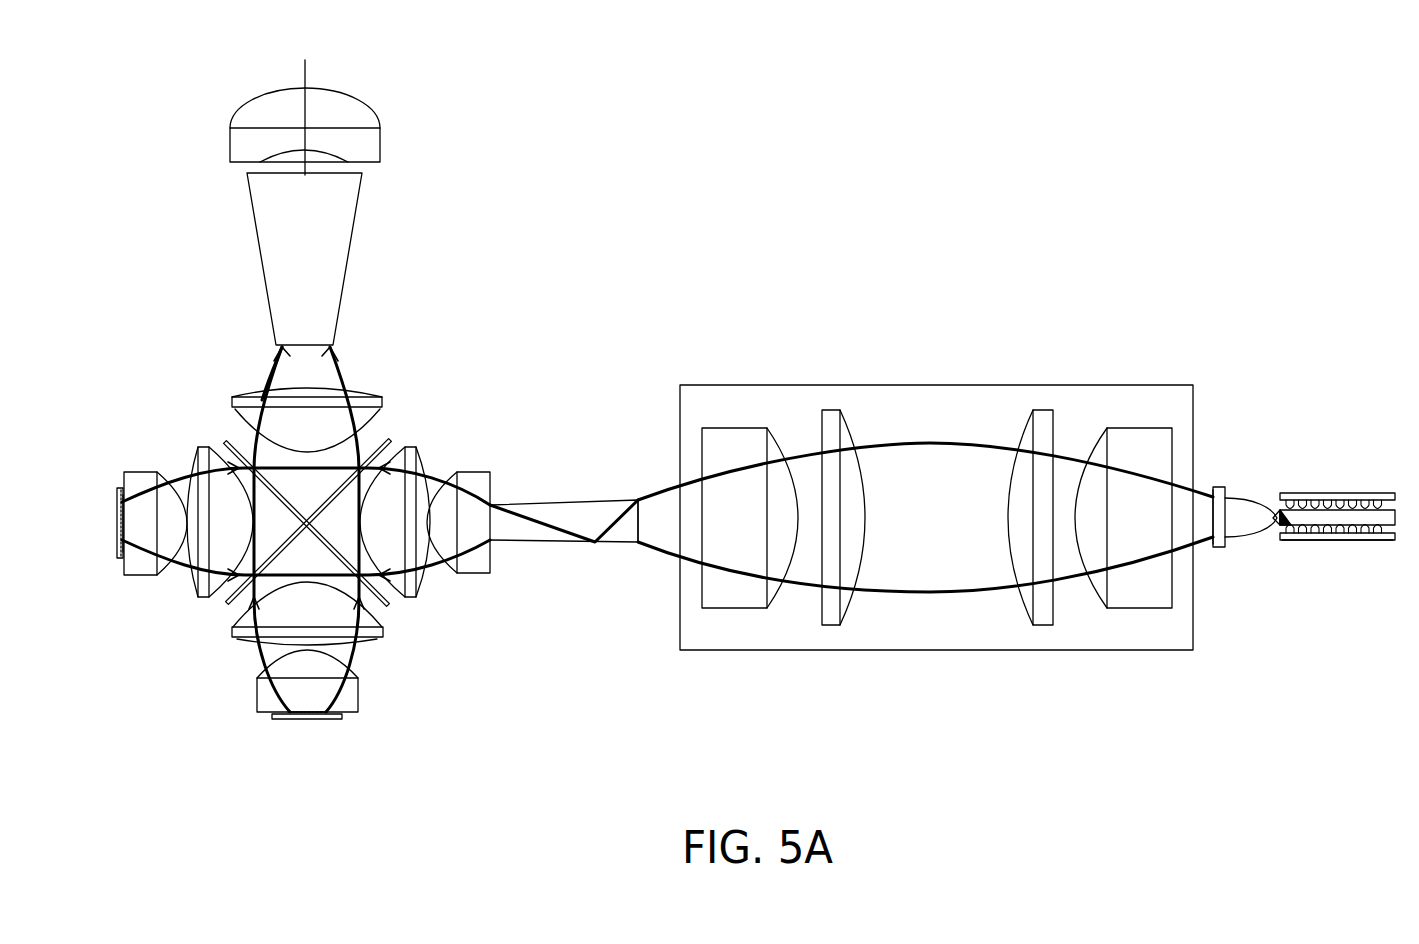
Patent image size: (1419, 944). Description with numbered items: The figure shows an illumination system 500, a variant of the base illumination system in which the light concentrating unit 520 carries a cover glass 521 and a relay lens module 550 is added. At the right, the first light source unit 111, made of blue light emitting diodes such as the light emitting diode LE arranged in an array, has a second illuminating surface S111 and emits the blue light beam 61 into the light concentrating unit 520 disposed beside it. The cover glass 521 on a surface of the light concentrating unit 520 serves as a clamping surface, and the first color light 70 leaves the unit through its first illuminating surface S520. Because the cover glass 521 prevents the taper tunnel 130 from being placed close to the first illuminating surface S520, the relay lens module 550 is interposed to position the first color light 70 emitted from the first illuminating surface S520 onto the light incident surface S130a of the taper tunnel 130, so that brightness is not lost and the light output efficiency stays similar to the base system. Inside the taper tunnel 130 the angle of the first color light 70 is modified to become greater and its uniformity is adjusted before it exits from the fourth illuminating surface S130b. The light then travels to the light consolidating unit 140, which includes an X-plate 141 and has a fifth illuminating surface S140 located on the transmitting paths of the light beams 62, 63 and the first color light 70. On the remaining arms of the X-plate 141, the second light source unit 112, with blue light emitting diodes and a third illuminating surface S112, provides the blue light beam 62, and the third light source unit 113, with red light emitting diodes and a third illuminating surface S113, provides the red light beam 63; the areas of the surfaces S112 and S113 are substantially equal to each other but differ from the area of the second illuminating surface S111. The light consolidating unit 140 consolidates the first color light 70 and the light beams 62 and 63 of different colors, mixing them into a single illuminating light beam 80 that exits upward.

The light consolidating unit 140 is at (172, 375).
The fifth illuminating surface S140 is at (280, 356).
The illuminating light beam 80 is at (348, 365).
The X-plate 141 is at (388, 440).
The third light source unit 113 is at (123, 503).
The third illuminating surface S113 is at (127, 542).
The light beam 63 is at (181, 578).
The light beam 62 is at (357, 651).
The second light source unit 112 is at (302, 720).
The third illuminating surface S112 is at (320, 697).
The illumination system 500 is at (290, 811).
The fourth illuminating surface S130b is at (483, 512).
The taper tunnel 130 is at (563, 505).
The light incident surface S130a is at (651, 517).
The first color light 70 is at (560, 543).
The relay lens module 550 is at (1003, 385).
The first illuminating surface S520 is at (1210, 517).
The light concentrating unit 520 is at (1250, 526).
The cover glass 521 is at (1220, 548).
The first light source unit 111 is at (1396, 478).
The light emitting substrate 61 is at (1291, 508).
The second illuminating surface S111 is at (1340, 505).
The light emitting diode LE is at (1322, 541).